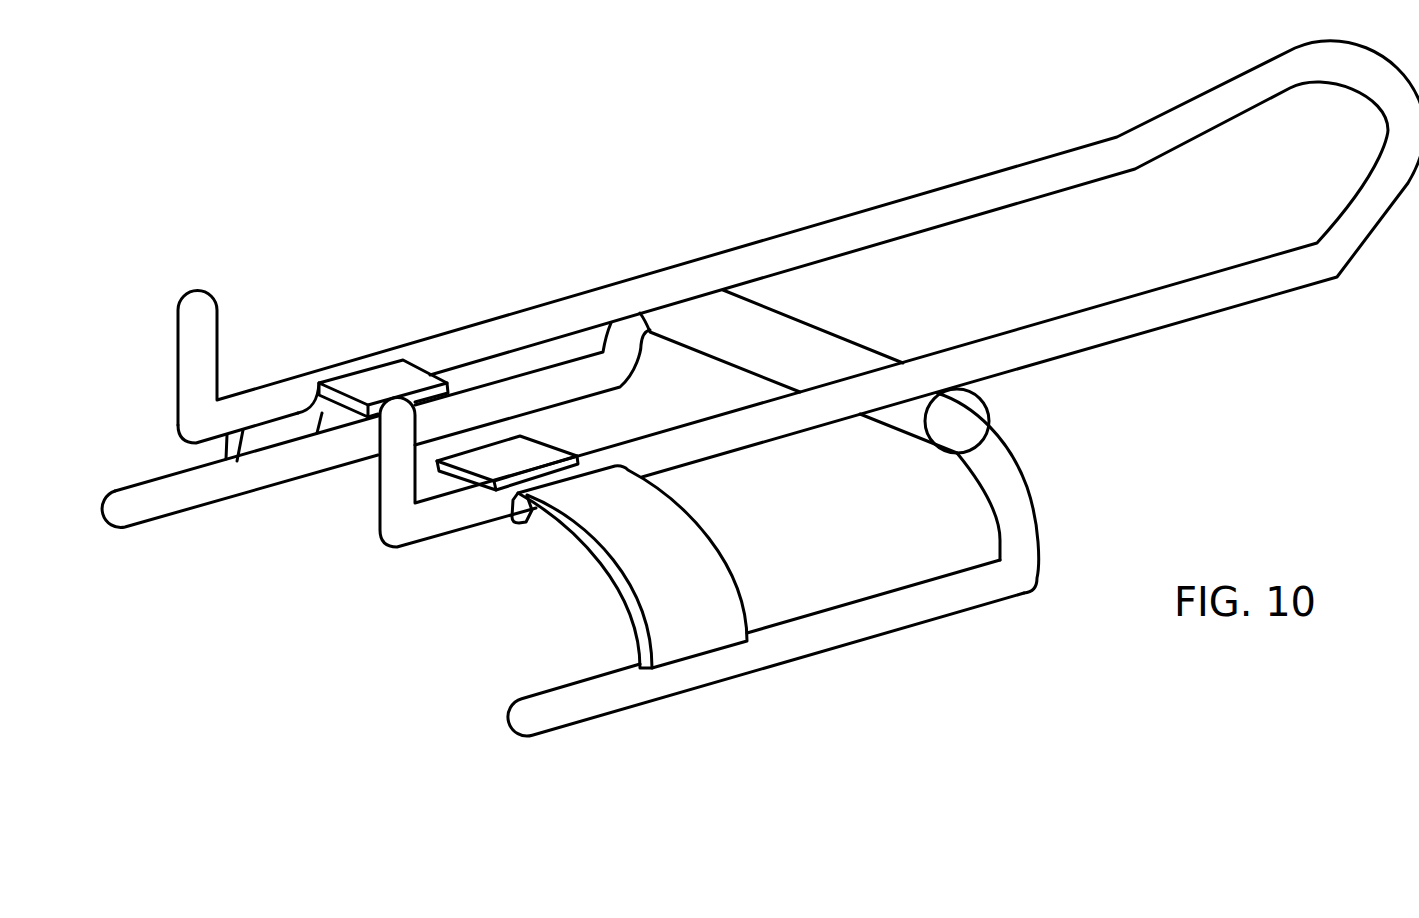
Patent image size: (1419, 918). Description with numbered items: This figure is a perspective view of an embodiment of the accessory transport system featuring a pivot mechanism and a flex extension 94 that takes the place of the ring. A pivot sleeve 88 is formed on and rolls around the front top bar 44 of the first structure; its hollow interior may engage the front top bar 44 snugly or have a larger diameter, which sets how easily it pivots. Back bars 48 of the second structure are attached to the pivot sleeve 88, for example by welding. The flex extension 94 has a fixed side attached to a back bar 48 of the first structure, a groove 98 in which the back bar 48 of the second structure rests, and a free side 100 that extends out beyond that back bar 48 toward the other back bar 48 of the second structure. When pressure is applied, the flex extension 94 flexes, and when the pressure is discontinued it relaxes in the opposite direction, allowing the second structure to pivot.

The front top bar 44 is at (1003, 490).
The back bar 48 is at (1147, 310).
The pivot sleeve 88 is at (745, 333).
The flex extension 94 is at (657, 598).
The groove 98 is at (503, 543).
The free side 100 is at (396, 379).